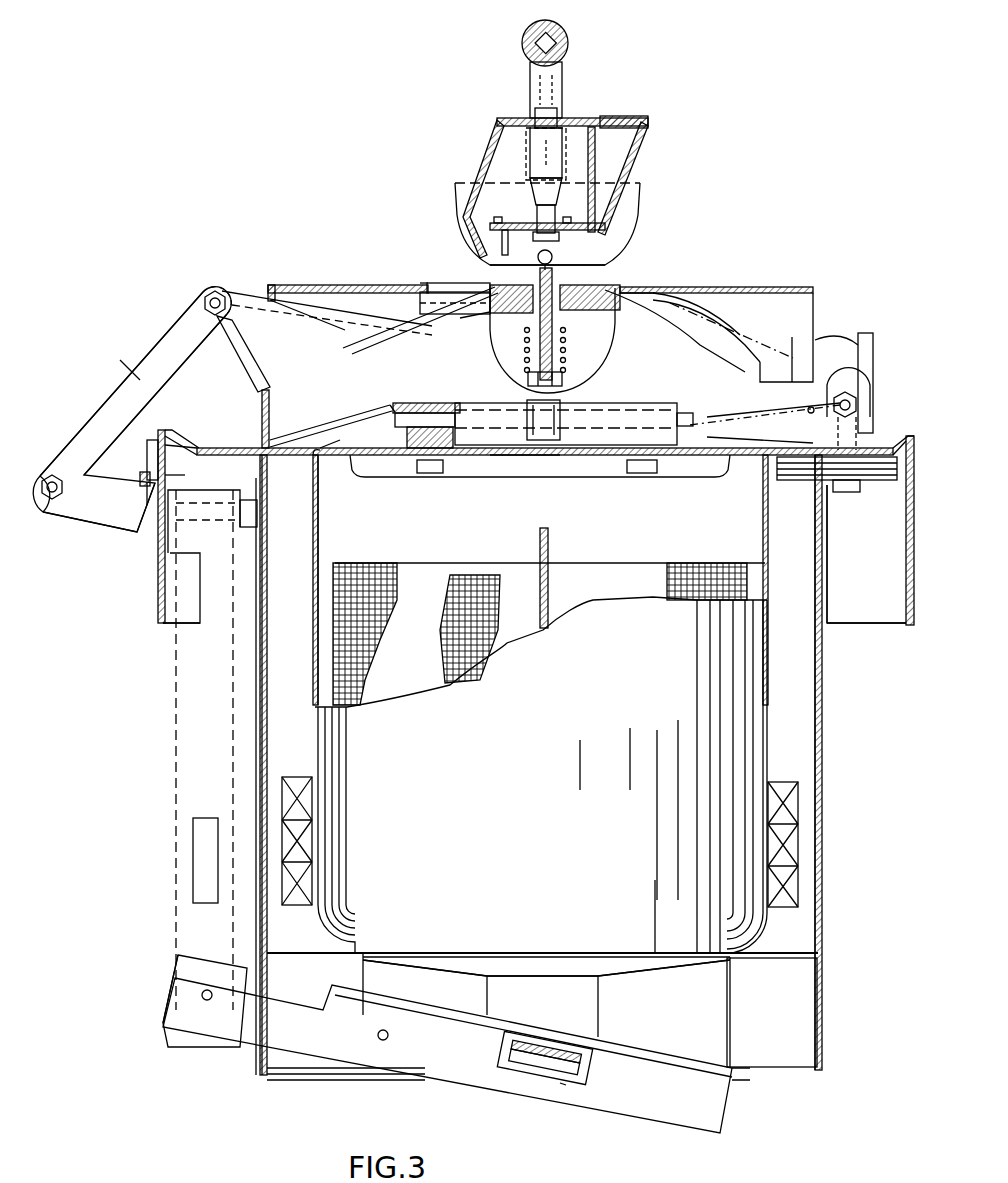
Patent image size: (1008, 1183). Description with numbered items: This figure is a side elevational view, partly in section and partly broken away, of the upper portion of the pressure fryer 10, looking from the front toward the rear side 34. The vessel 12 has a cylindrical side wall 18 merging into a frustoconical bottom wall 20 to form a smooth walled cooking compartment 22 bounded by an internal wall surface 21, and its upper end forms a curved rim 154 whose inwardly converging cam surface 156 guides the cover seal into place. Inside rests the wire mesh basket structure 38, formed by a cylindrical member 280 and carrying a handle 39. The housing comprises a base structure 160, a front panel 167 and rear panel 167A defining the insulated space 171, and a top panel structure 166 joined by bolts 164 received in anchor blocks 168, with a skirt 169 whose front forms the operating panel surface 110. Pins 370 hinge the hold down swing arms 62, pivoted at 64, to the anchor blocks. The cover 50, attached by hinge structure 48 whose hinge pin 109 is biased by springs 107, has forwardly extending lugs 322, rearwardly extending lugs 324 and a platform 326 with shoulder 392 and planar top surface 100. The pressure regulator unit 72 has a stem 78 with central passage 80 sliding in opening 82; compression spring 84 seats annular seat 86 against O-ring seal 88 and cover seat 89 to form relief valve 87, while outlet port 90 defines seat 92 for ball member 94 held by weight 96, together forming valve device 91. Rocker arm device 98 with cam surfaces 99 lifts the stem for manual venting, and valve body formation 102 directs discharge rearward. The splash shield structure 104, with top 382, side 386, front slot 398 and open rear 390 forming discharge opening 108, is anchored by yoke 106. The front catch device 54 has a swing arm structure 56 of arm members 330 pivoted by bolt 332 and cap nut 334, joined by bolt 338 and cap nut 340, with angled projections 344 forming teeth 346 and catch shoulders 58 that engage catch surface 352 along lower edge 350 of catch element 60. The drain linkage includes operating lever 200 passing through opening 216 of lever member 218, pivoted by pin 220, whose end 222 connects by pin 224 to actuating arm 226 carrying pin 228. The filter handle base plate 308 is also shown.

The fryer 10 is at (790, 190).
The vessel 12 is at (290, 713).
The cylindrical side wall 18 is at (262, 575).
The frustoconical bottom wall 20 is at (625, 975).
The internal wall surface 21 is at (320, 512).
The cooking or frying compartment 22 is at (345, 538).
The rear side 34 is at (145, 400).
The basket structure 38 is at (690, 560).
The handle 39 is at (550, 535).
The hinge structure 48 is at (865, 330).
The cover 50 is at (700, 325).
The catch device 54 is at (185, 263).
The swing arm structure 56 is at (120, 345).
The catch shoulders 58 is at (92, 522).
The catch element 60 is at (135, 455).
The hold down swing arms 62 is at (545, 438).
The pivotal connection 64 is at (600, 395).
The pressure regulator unit 72 is at (690, 130).
The stem 78 is at (527, 425).
The central passage 80 is at (530, 320).
The opening 82 is at (511, 299).
The compression spring 84 is at (525, 373).
The annular seat 86 is at (420, 300).
The relief valve 87 is at (415, 277).
The O-ring seal 88 is at (525, 345).
The annular seat 89 is at (462, 320).
The outlet port 90 is at (535, 262).
The valve device 91 is at (520, 272).
The seat 92 is at (590, 297).
The ball member 94 is at (480, 262).
The weight 96 is at (535, 150).
The swing or rocker arm device 98 is at (640, 45).
The cam surfaces 99 is at (455, 185).
The top surface 100 is at (660, 290).
The valve body formation 102 is at (600, 240).
The splash shield structure 104 is at (313, 285).
The yoke 106 is at (252, 378).
The springs 107 is at (862, 400).
The discharge opening 108 is at (815, 310).
The cover hinge pin 109 is at (830, 405).
The operating panel surface 110 is at (160, 625).
The curved rim 154 is at (330, 440).
The cam surface 156 is at (400, 405).
The base structure 160 is at (800, 940).
The bolts 164 is at (625, 466).
The top panel structure 166 is at (870, 440).
The front panel 167 is at (318, 750).
The rear panel 167A is at (822, 760).
The anchor blocks 168 is at (440, 403).
The skirt 169 is at (905, 615).
The space 171 is at (800, 810).
The operating lever 200 is at (545, 1045).
The opening 216 is at (575, 1080).
The lever member 218 is at (448, 1005).
The pin 220 is at (385, 1030).
The end 222 is at (170, 1007).
The pin 224 is at (208, 1002).
The actuating arm 226 is at (200, 800).
The pin 228 is at (205, 522).
The cylindrical member 280 is at (730, 563).
The base plate 308 is at (353, 285).
The forwardly extending lugs 322 is at (248, 298).
The rearwardly extending lugs 324 is at (792, 345).
The platform 326 is at (425, 322).
The arm members 330 is at (153, 340).
The bolt 332 is at (218, 290).
The cap nut 334 is at (200, 302).
The bolt 338 is at (50, 475).
The cap nut 340 is at (52, 500).
The angled projections 344 is at (150, 540).
The tooth 346 is at (172, 478).
The lower edge 350 is at (135, 483).
The catch surface 352 is at (170, 455).
The pins 370 is at (418, 460).
The top 382 is at (283, 285).
The side 386 is at (283, 430).
The open rear 390 is at (873, 345).
The shoulder 392 is at (690, 288).
The front slot 398 is at (272, 392).